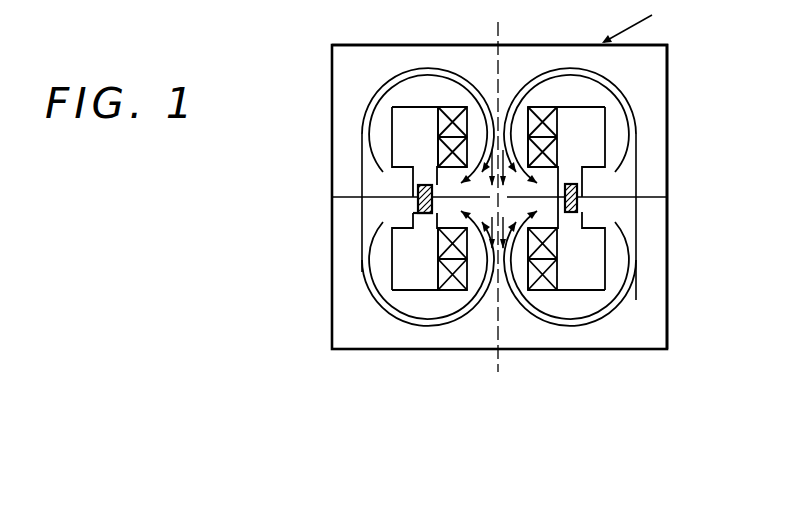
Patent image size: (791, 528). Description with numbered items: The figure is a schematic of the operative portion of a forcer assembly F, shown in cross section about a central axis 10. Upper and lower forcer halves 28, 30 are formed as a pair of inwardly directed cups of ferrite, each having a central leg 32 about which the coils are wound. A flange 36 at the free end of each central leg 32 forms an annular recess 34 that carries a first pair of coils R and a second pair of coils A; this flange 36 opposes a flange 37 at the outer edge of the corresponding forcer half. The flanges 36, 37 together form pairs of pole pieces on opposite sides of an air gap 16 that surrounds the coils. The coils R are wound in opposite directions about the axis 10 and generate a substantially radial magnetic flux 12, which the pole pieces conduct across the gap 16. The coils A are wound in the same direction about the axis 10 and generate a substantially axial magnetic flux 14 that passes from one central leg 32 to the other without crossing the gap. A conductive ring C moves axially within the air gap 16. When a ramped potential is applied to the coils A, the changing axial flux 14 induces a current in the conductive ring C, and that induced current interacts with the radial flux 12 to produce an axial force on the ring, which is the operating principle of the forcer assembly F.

The axis 10 is at (500, 353).
The radial magnetic flux 12 is at (393, 183).
The axial magnetic flux 14 is at (512, 300).
The air gap 16 is at (430, 217).
The upper forcer half 28 is at (650, 72).
The lower forcer half 30 is at (653, 300).
The central leg 32 is at (523, 135).
The annular recess 34 is at (450, 105).
The flange 36 is at (440, 176).
The flange 37 is at (592, 178).
The conductive ring C is at (590, 219).
The first pair of coils R is at (437, 121).
The second pair of coils A is at (437, 150).
The forcer assembly F is at (636, 23).